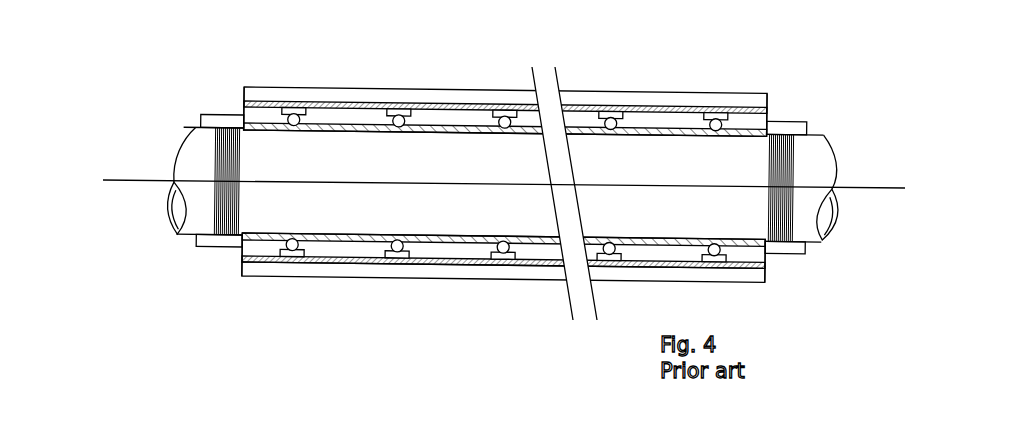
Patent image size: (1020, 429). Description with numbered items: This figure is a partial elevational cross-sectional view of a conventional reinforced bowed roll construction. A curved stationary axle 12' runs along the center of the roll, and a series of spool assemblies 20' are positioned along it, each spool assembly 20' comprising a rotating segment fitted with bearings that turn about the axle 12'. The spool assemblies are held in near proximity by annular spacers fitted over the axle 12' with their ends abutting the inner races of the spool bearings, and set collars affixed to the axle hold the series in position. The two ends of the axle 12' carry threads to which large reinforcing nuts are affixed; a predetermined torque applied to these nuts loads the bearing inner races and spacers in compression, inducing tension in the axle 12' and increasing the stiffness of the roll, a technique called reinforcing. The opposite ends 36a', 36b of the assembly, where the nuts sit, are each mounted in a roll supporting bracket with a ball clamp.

The axle 12' is at (470, 182).
The spool assembly 20' is at (382, 306).
The first end of the assembly 36a' is at (178, 146).
The second end of the assembly 36b is at (768, 102).